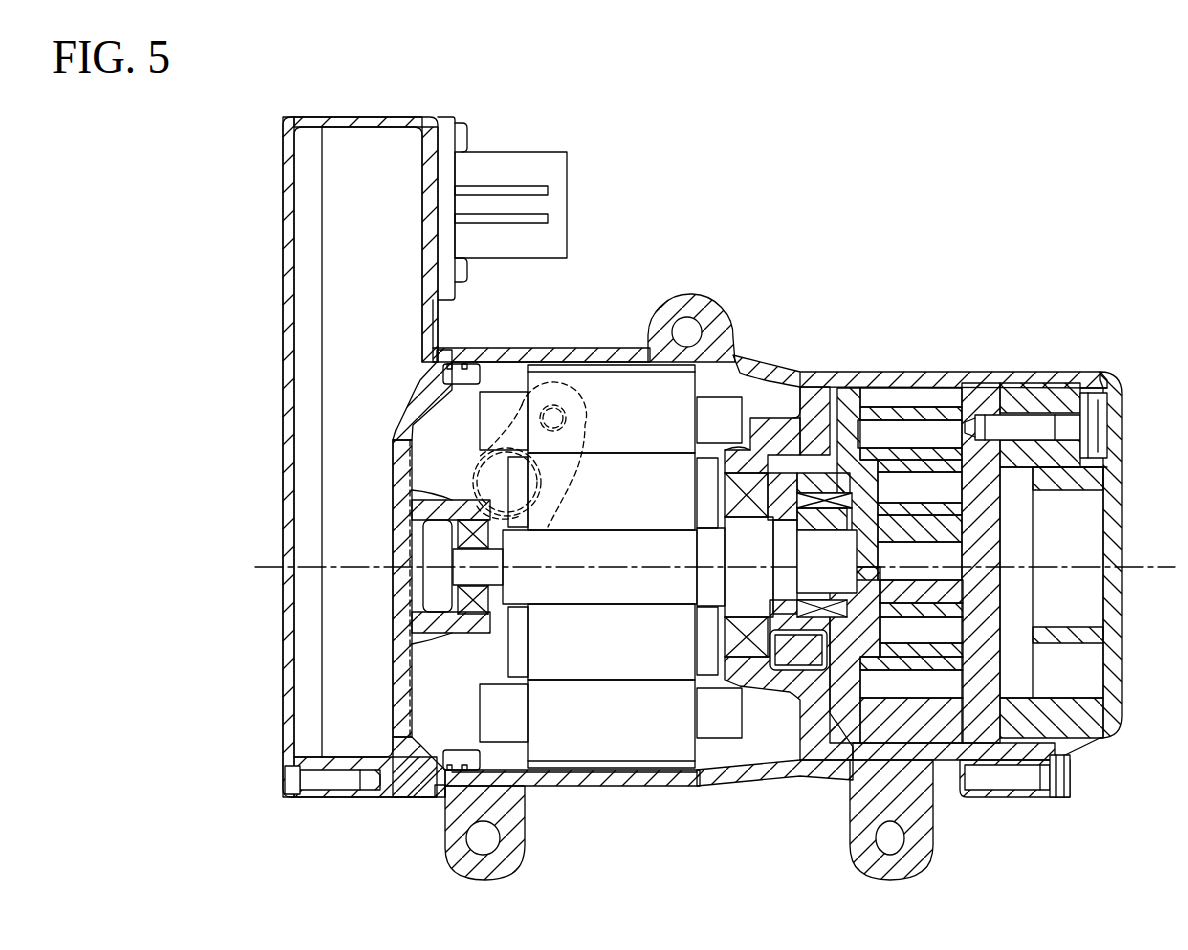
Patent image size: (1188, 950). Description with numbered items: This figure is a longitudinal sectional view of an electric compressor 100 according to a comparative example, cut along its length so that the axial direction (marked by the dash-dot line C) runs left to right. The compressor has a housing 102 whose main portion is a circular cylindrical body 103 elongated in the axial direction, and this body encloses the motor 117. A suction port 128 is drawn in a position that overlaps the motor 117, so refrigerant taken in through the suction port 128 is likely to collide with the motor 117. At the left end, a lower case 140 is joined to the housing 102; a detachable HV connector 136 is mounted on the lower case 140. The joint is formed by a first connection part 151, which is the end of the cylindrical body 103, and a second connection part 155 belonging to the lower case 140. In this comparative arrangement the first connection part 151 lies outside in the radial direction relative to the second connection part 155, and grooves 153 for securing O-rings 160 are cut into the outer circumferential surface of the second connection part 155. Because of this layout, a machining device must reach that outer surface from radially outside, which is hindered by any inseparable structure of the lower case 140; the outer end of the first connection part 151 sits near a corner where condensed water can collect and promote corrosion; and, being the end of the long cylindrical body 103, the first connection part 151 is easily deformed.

The electric compressor 100 is at (1046, 216).
The housing 102 is at (809, 372).
The circular cylindrical body 103 is at (620, 355).
The motor 117 is at (693, 385).
The suction port 128 is at (558, 395).
The HV connector 136 is at (521, 162).
The lower case 140 is at (376, 125).
The first connection part 151 is at (470, 355).
The grooves 153 is at (442, 364).
The second connection part 155 is at (442, 404).
The O-rings 160 is at (440, 372).
The rotation axis C is at (1143, 562).